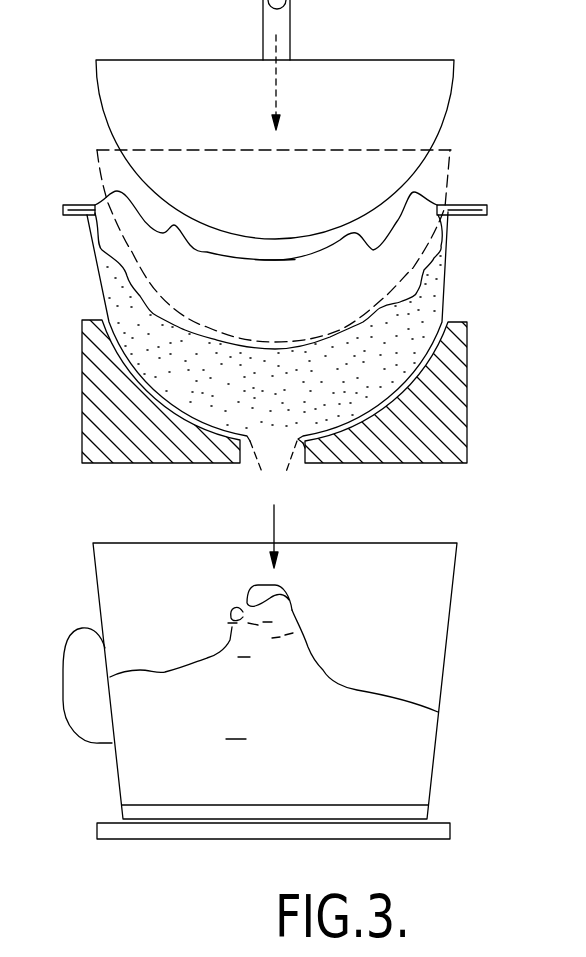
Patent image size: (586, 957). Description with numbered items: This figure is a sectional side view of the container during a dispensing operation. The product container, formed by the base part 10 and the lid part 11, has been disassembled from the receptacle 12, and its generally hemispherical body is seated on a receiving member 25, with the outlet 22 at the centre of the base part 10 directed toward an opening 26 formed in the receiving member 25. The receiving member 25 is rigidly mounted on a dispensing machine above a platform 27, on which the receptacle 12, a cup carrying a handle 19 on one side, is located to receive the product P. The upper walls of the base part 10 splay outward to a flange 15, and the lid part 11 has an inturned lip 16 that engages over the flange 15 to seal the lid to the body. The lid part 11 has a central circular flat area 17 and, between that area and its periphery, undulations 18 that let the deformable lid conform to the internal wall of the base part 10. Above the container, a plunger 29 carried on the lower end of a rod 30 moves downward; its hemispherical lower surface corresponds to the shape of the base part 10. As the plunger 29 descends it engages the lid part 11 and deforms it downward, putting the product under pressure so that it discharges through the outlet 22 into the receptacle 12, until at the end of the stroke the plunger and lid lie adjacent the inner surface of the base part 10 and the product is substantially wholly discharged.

The base part 10 is at (446, 288).
The lid part 11 is at (416, 216).
The receptacle 12 is at (445, 657).
The flange 15 is at (85, 218).
The inturned lip 16 is at (487, 208).
The central circular flat area 17 is at (277, 263).
The undulations 18 is at (171, 241).
The handle 19 is at (64, 712).
The outlet 22 is at (266, 470).
The receiving member 25 is at (445, 404).
The opening 26 is at (306, 448).
The platform 27 is at (453, 823).
The plunger 29 is at (451, 103).
The rod 30 is at (290, 28).